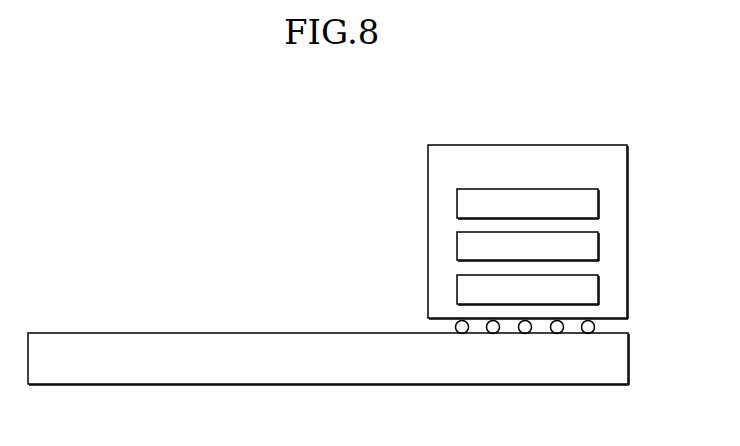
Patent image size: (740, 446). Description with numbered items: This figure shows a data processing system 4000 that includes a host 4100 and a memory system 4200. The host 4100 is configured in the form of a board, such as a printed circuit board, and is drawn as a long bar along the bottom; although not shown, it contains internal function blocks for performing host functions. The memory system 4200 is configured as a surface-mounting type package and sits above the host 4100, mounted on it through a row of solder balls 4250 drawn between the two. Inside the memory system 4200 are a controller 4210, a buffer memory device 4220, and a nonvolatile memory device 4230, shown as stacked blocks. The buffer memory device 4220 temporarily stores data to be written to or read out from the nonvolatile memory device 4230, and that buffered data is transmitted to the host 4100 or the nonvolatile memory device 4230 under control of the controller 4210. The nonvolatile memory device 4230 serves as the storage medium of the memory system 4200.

The data processing system 4000 is at (108, 117).
The host 4100 is at (328, 359).
The memory system 4200 is at (528, 232).
The controller 4210 is at (528, 204).
The buffer memory device 4220 is at (528, 246).
The nonvolatile memory device 4230 is at (528, 290).
The solder balls 4250 is at (608, 328).